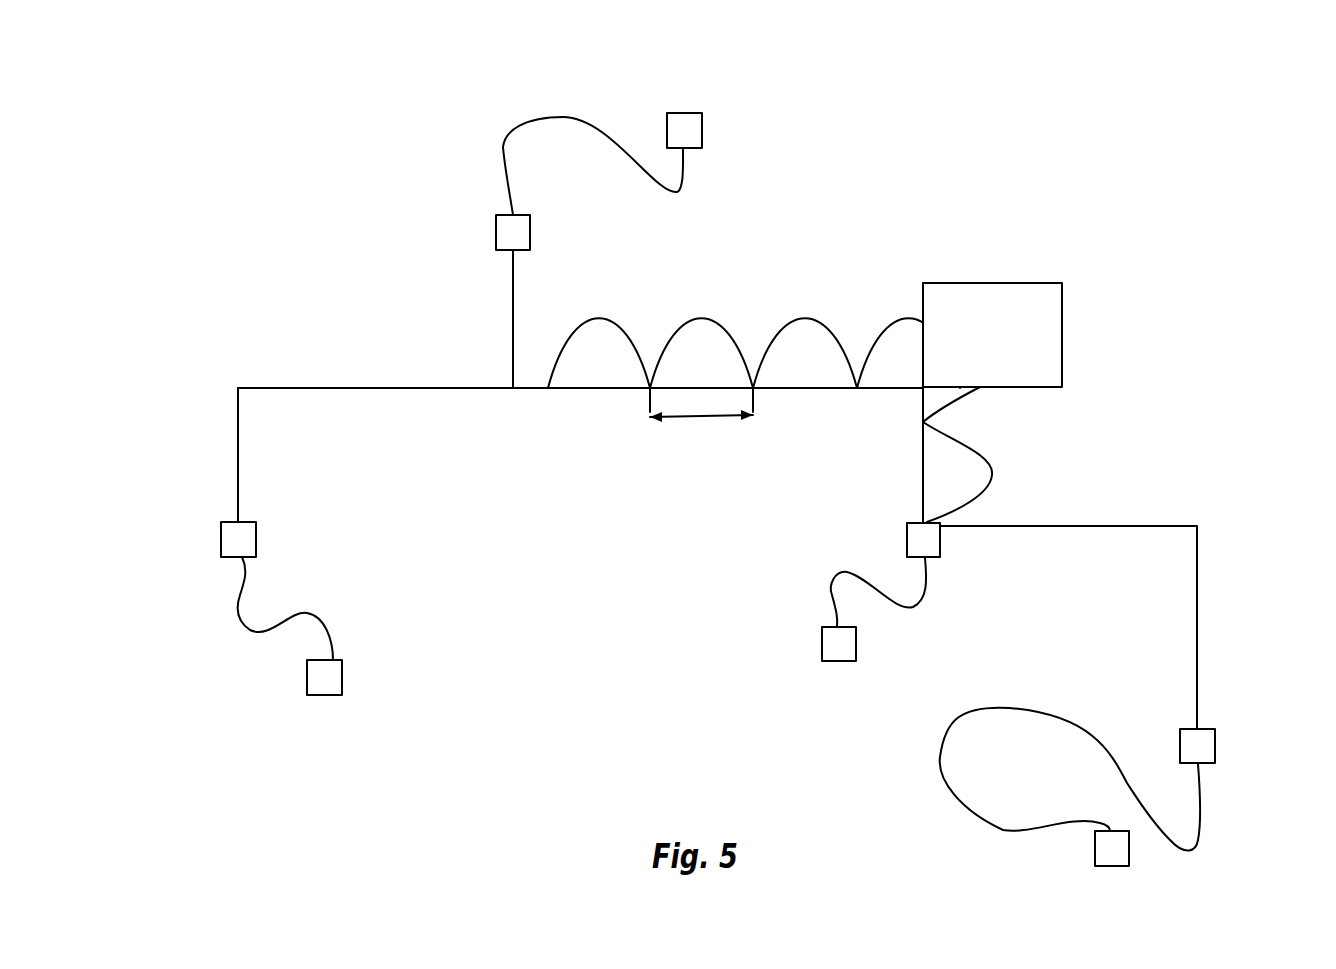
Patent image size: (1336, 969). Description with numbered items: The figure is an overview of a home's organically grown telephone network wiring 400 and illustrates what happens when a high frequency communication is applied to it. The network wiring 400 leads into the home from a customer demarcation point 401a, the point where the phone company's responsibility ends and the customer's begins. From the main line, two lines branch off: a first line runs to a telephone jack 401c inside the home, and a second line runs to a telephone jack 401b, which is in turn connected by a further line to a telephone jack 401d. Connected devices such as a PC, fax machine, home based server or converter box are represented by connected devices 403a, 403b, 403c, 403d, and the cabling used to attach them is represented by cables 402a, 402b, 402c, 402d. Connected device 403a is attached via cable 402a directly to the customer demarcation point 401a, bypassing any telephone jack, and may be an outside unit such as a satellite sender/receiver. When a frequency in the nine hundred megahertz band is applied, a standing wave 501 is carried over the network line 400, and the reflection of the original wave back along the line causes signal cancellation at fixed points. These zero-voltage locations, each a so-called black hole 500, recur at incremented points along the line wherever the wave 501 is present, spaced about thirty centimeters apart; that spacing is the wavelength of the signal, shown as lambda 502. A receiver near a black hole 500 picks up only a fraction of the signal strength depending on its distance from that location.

The network wiring 400 is at (470, 364).
The customer demarcation point 401a is at (530, 232).
The telephone jack 401b is at (905, 540).
The telephone jack 401c is at (257, 540).
The telephone jack 401d is at (1215, 747).
The cable 402a is at (503, 147).
The cable 402b is at (847, 572).
The cable 402c is at (237, 592).
The cable 402d is at (940, 760).
The connected device 403a is at (702, 130).
The connected device 403b is at (820, 643).
The connected device 403c is at (342, 677).
The connected device 403d is at (1093, 849).
The black hole 500 is at (754, 324).
The standing wave 501 is at (702, 318).
The lambda 502 is at (680, 423).